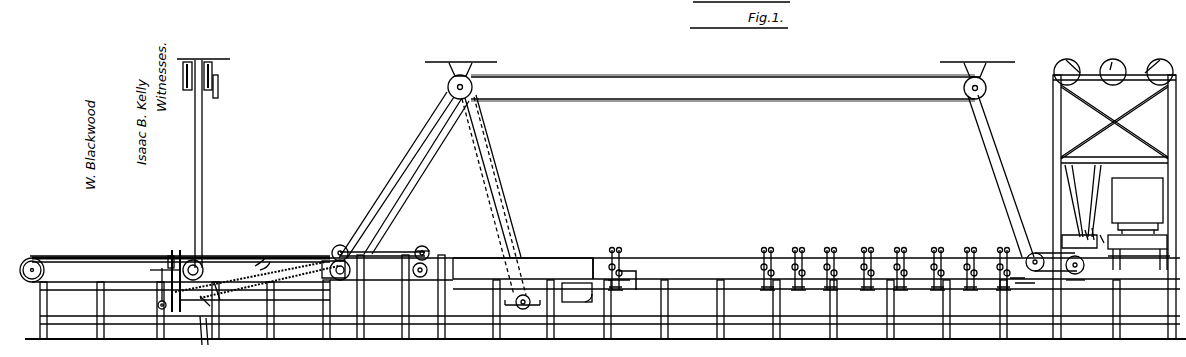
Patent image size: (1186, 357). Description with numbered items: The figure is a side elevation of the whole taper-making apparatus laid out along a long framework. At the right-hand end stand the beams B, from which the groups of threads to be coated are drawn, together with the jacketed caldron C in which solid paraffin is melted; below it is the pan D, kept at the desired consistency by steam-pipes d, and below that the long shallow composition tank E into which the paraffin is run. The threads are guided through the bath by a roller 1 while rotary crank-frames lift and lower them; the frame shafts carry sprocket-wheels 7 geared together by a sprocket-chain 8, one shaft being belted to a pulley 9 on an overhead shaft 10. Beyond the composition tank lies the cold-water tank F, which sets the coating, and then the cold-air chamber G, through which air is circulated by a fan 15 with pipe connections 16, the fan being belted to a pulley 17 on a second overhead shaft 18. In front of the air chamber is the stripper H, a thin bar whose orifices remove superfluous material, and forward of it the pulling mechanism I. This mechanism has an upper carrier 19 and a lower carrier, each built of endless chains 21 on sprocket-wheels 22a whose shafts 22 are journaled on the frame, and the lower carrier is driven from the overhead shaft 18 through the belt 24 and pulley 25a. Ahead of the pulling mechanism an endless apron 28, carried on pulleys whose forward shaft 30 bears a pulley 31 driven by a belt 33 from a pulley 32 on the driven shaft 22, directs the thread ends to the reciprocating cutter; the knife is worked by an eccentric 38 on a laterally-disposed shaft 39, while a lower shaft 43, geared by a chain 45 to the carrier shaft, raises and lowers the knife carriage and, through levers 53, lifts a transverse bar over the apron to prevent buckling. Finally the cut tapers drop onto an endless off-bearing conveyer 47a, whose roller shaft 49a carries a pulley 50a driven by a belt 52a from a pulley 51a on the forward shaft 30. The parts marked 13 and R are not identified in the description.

The roller 1 is at (1086, 232).
The sprocket-wheel 7 is at (1040, 253).
The sprocket-chain 8 is at (1083, 272).
The pulley 9 is at (968, 100).
The overhead shaft 10 is at (985, 90).
The holders 13 is at (797, 250).
The fan 15 is at (524, 310).
The pipe connections 16 is at (577, 293).
The pulley 17 is at (480, 100).
The overhead shaft 18 is at (465, 87).
The carrier 19 is at (494, 195).
The endless chain 21 is at (422, 247).
The shaft 22 is at (337, 246).
The sprocket-wheel 22a is at (428, 250).
The belt 24 is at (397, 168).
The pulley 25a is at (447, 93).
The endless apron 28 is at (268, 267).
The shaft 30 is at (201, 336).
The pulley 31 is at (218, 256).
The pulley 32 is at (323, 262).
The belt 33 is at (265, 262).
The eccentric 38 is at (165, 262).
The laterally-disposed shaft 39 is at (182, 262).
The lower shaft 43 is at (157, 306).
The chain 45 is at (289, 286).
The off-bearing conveyer 47a is at (143, 270).
The shaft 49a is at (32, 280).
The pulley 50a is at (42, 270).
The pulley 51a is at (190, 258).
The belt 52a is at (90, 257).
The lever 53 is at (256, 288).
The beam B is at (1095, 60).
The jacketed caldron C is at (1137, 206).
The pan D is at (1139, 252).
The composition tank E is at (975, 256).
The water tank F is at (728, 258).
The cold-air chamber G is at (546, 258).
The stripper bar H is at (450, 268).
The pulling mechanism I is at (395, 254).
The frame R is at (1168, 310).
The steam-pipe d is at (1096, 232).